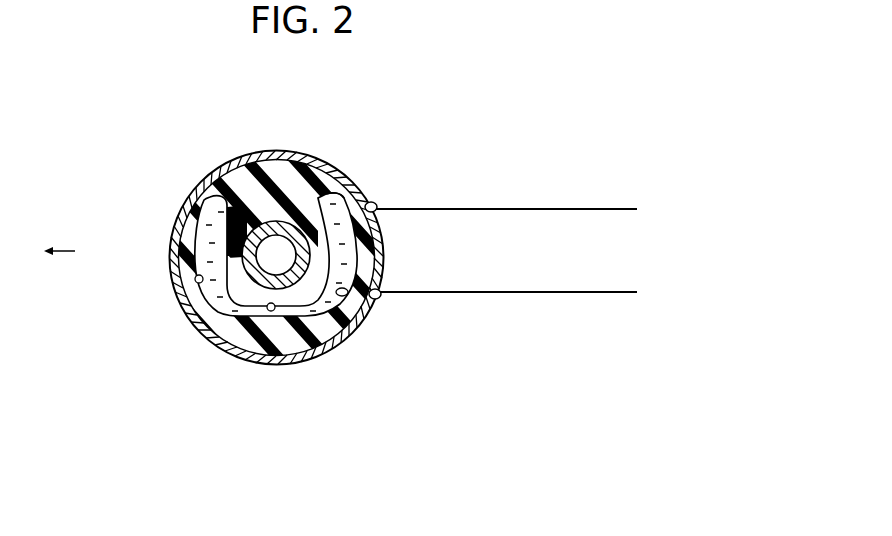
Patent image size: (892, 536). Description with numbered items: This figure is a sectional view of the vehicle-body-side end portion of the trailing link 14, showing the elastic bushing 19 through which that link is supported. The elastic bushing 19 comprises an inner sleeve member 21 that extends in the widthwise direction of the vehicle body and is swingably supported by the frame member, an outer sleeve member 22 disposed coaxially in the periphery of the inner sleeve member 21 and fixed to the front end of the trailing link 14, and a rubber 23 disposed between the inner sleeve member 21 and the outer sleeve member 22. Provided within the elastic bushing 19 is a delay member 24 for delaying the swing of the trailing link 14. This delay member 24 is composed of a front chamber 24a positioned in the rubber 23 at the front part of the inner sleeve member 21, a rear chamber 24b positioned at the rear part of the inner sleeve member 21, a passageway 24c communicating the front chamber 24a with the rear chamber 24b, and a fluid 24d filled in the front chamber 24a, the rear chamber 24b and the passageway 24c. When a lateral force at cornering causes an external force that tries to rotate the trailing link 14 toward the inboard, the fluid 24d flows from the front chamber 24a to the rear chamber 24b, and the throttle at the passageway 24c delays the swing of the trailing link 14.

The trailing link 14 is at (535, 209).
The elastic bushing 19 is at (183, 168).
The inner sleeve member 21 is at (287, 217).
The outer sleeve member 22 is at (270, 152).
The rubber 23 is at (234, 167).
The delay member 24 is at (228, 341).
The front chamber 24a is at (184, 274).
The rear chamber 24b is at (360, 307).
The passageway 24c is at (279, 313).
The fluid 24d is at (358, 192).